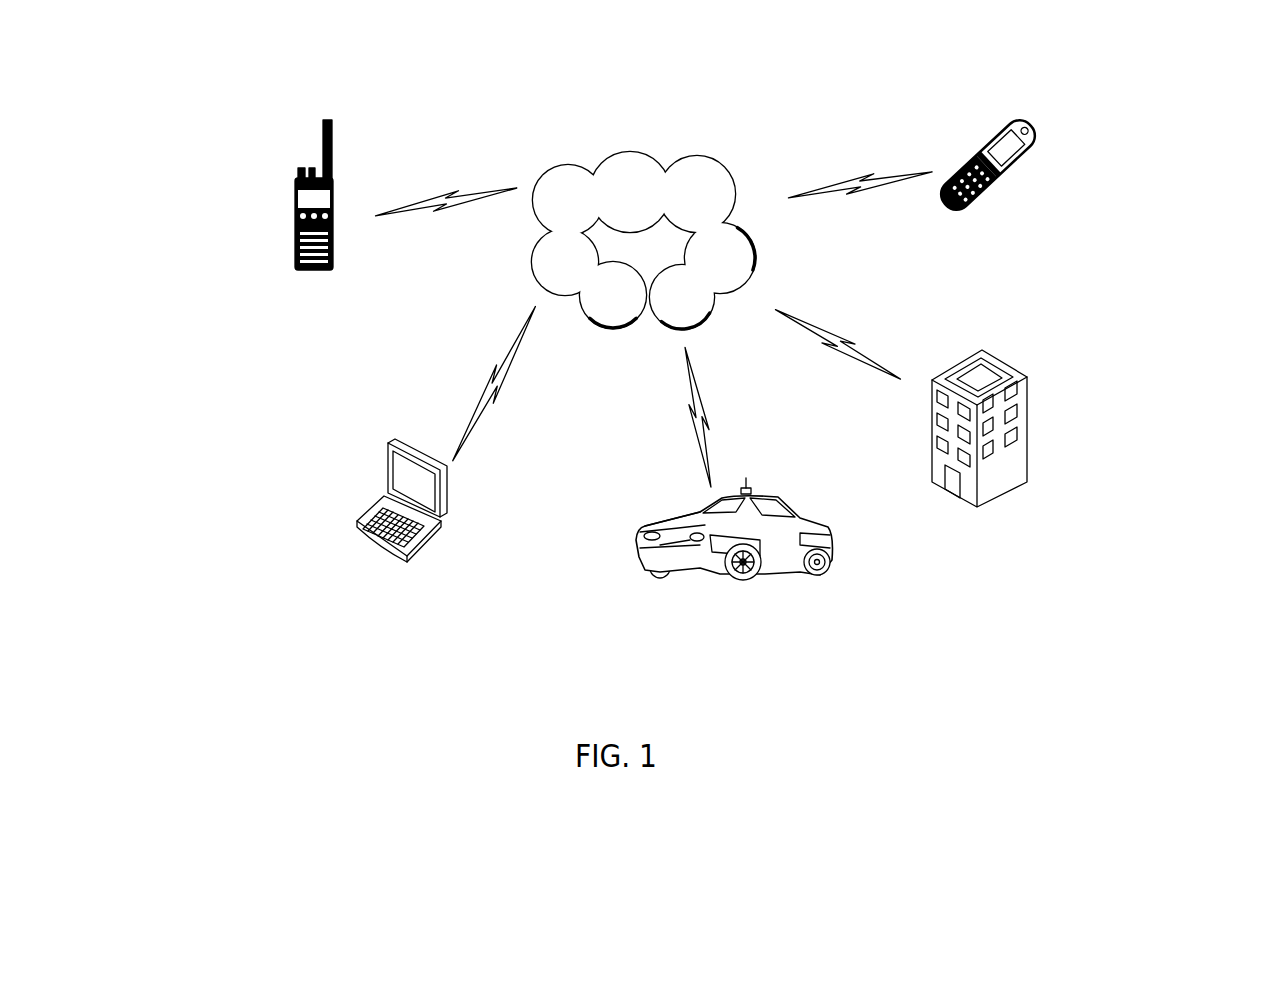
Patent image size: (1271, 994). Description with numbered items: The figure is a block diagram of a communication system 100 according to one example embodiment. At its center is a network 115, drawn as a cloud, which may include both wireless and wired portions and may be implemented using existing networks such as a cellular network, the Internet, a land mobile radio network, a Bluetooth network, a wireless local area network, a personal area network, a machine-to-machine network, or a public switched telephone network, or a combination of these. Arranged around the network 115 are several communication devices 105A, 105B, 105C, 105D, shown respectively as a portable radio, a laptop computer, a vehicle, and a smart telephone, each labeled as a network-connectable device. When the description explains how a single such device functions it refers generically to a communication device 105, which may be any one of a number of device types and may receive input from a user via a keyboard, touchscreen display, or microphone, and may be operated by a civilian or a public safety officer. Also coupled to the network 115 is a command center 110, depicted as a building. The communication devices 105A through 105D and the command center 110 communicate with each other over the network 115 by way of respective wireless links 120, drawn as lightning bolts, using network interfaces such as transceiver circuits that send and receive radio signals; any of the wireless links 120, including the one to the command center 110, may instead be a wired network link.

The communication system 100 is at (232, 72).
The communication device 105 is at (345, 287).
The communication device 105A is at (295, 259).
The communication device 105B is at (358, 526).
The communication device 105C is at (758, 583).
The communication device 105D is at (1012, 183).
The command center 110 is at (1030, 432).
The network 115 is at (533, 265).
The wireless link 120 is at (474, 191).